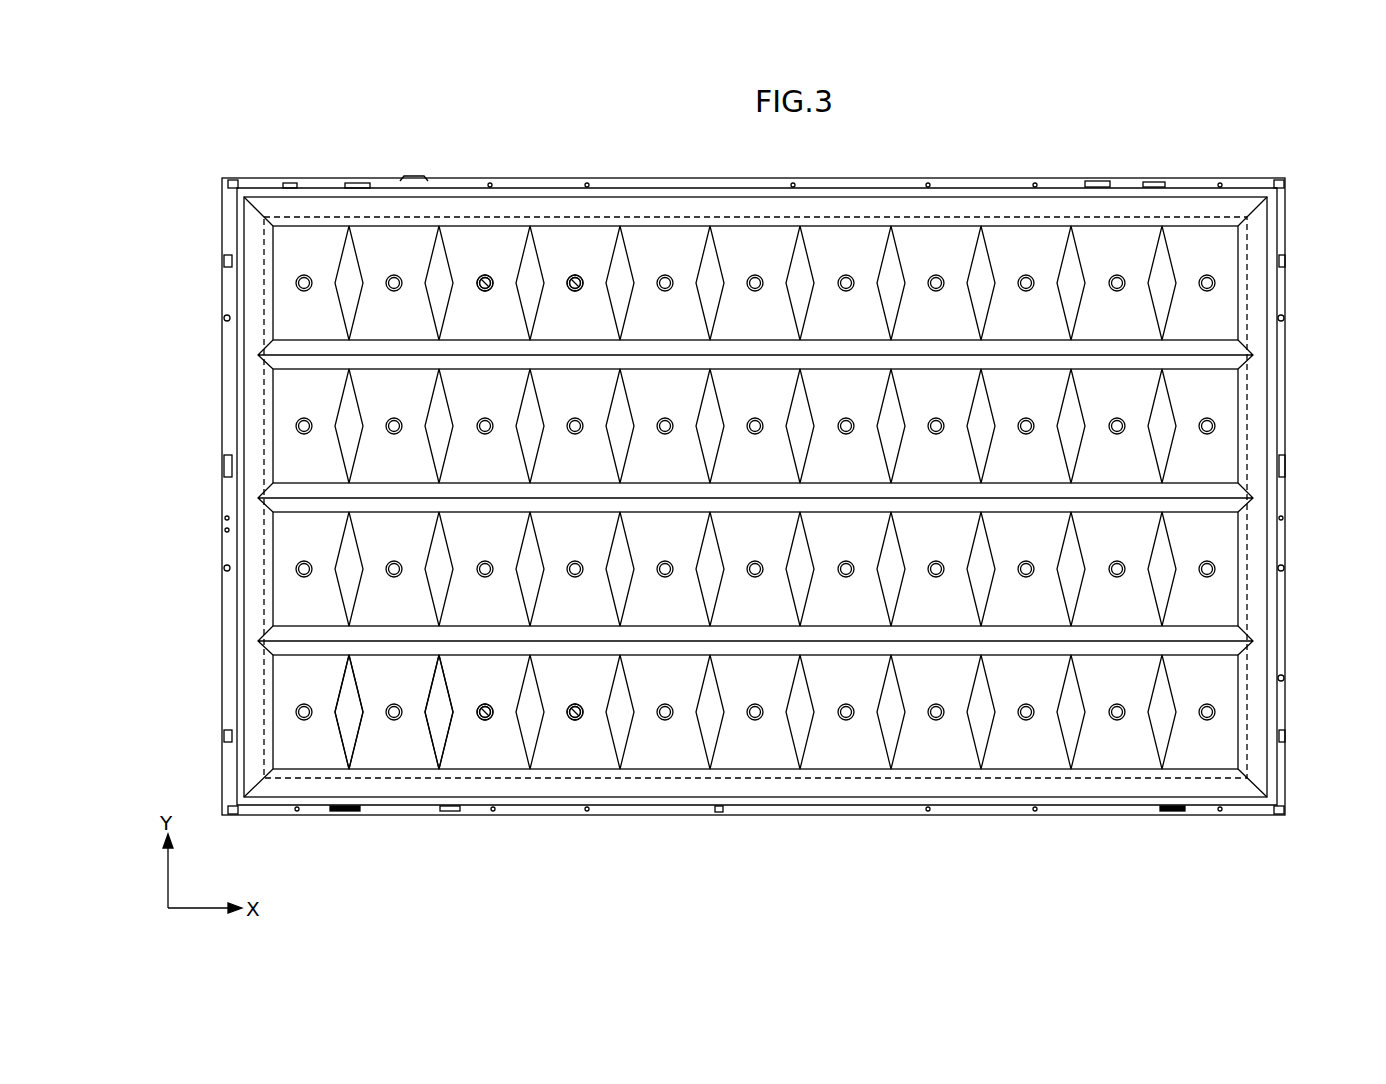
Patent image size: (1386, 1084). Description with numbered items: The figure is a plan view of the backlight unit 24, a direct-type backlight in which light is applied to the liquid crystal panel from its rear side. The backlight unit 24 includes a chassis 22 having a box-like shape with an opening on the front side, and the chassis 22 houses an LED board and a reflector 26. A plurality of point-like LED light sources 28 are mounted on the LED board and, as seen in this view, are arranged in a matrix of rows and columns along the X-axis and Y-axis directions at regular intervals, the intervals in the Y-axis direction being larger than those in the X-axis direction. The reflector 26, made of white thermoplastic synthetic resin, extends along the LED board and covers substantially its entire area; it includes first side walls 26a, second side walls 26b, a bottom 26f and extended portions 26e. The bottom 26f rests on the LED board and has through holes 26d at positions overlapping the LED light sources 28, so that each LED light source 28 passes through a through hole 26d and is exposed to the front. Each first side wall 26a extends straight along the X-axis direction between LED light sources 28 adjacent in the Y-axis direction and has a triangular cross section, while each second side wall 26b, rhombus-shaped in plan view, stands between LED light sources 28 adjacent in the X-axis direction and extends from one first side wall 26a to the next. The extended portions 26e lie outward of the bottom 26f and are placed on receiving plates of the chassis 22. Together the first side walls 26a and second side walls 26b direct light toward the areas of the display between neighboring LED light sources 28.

The chassis 22 is at (1285, 752).
The backlight unit 24 is at (753, 828).
The reflector 26 is at (1278, 663).
The first side wall 26a is at (298, 632).
The second side wall 26b is at (440, 735).
The through hole 26d is at (575, 275).
The extended portion 26e is at (1273, 603).
The bottom 26f is at (669, 752).
The LED light source 28 is at (575, 722).